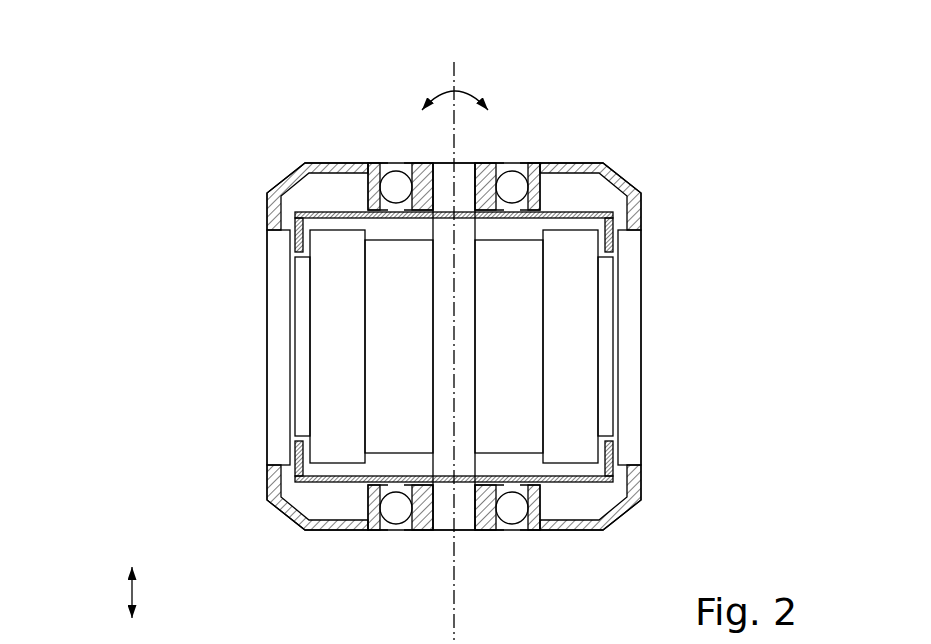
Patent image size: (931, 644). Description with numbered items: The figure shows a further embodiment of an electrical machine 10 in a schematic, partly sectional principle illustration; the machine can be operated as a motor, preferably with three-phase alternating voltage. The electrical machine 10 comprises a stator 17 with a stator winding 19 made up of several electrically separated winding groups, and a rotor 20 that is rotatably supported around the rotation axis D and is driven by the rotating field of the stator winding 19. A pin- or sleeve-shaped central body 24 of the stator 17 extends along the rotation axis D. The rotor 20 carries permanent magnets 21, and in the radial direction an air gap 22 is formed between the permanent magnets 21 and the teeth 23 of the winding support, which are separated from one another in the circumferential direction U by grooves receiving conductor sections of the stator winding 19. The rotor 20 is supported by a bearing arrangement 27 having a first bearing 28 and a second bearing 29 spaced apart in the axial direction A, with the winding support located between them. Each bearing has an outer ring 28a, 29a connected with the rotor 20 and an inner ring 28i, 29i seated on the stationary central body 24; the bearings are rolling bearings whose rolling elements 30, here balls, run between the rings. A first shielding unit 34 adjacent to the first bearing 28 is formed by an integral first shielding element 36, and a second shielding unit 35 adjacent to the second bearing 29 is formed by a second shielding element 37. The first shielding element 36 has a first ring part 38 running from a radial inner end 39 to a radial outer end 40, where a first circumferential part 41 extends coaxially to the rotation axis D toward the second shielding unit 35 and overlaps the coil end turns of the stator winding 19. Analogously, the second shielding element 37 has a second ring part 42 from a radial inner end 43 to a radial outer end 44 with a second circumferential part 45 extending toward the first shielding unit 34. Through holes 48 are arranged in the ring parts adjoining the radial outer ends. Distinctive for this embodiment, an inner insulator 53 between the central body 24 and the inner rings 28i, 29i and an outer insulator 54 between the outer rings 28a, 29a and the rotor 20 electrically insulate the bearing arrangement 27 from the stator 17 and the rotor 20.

The electrical machine 10 is at (658, 108).
The stator 17 is at (537, 213).
The stator winding 19 is at (587, 318).
The rotor 20 is at (277, 158).
The permanent magnets 21 is at (278, 293).
The air gap 22 is at (294, 338).
The teeth 23 is at (306, 368).
The central body 24 is at (442, 530).
The bearing arrangement 27 is at (396, 215).
The first bearing 28 is at (453, 143).
The outer ring of first bearing 28a is at (380, 163).
The inner ring of first bearing 28i is at (410, 163).
The second bearing 29 is at (433, 559).
The outer ring of second bearing 29a is at (370, 530).
The inner ring of second bearing 29i is at (410, 530).
The rolling elements 30 is at (512, 163).
The first shielding unit 34 is at (592, 192).
The second shielding unit 35 is at (588, 490).
The first shielding element 36 is at (590, 196).
The second shielding element 37 is at (590, 497).
The first ring part 38 is at (570, 218).
The radial inner end of first shielding unit 39 is at (490, 218).
The radial outer end of first shielding unit 40 is at (626, 207).
The first circumferential part 41 is at (613, 217).
The second ring part 42 is at (557, 472).
The radial inner end of second shielding unit 43 is at (480, 474).
The radial outer end of second shielding unit 44 is at (610, 481).
The second circumferential part 45 is at (633, 455).
The through holes 48 is at (340, 207).
The inner insulator 53 is at (481, 530).
The outer insulator 54 is at (548, 530).
The rotation axis D is at (458, 70).
The circumferential direction U is at (485, 92).
The axial direction A is at (131, 589).